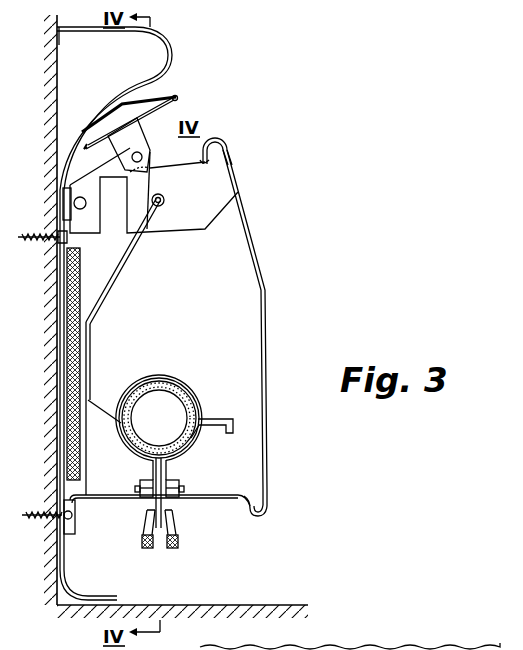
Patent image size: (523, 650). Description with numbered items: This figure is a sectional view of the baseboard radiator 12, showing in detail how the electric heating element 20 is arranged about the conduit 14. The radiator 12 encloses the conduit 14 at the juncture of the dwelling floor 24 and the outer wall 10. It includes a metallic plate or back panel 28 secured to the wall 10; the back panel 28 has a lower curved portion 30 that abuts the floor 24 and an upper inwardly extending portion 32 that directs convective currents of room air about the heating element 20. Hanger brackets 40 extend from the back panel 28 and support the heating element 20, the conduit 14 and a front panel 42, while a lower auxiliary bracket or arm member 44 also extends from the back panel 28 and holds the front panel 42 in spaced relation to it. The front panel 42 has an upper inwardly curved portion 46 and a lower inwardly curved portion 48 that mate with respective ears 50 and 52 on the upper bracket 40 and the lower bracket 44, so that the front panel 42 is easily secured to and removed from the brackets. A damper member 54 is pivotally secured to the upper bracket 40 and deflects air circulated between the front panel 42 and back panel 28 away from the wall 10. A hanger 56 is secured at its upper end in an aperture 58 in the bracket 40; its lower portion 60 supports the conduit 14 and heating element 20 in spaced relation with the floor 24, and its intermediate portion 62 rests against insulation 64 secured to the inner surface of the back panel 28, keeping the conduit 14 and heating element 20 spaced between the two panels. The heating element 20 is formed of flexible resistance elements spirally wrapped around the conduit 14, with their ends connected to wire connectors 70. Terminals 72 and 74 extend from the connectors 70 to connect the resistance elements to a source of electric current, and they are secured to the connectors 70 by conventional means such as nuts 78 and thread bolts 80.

The outer wall 10 is at (57, 170).
The baseboard radiator 12 is at (287, 158).
The conduit 14 is at (161, 396).
The heating element 20 is at (189, 397).
The dwelling floor 24 is at (118, 606).
The back panel 28 is at (60, 313).
The lower curved portion 30 is at (95, 600).
The upper inwardly extending portion 32 is at (172, 56).
The hanger bracket 40 is at (233, 184).
The front panel 42 is at (267, 268).
The lower auxiliary bracket 44 is at (230, 498).
The upper inwardly curved portion 46 is at (216, 143).
The lower inwardly curved portion 48 is at (258, 517).
The ear 50 is at (203, 160).
The ear 52 is at (269, 495).
The damper member 54 is at (176, 101).
The hanger 56 is at (128, 258).
The aperture 58 is at (166, 199).
The lower portion 60 is at (214, 418).
The intermediate portion 62 is at (90, 355).
The insulation 64 is at (81, 279).
The wire connector 70 is at (187, 452).
The terminal 72 is at (176, 543).
The terminal 74 is at (145, 543).
The nut 78 is at (172, 480).
The thread bolt 80 is at (140, 490).